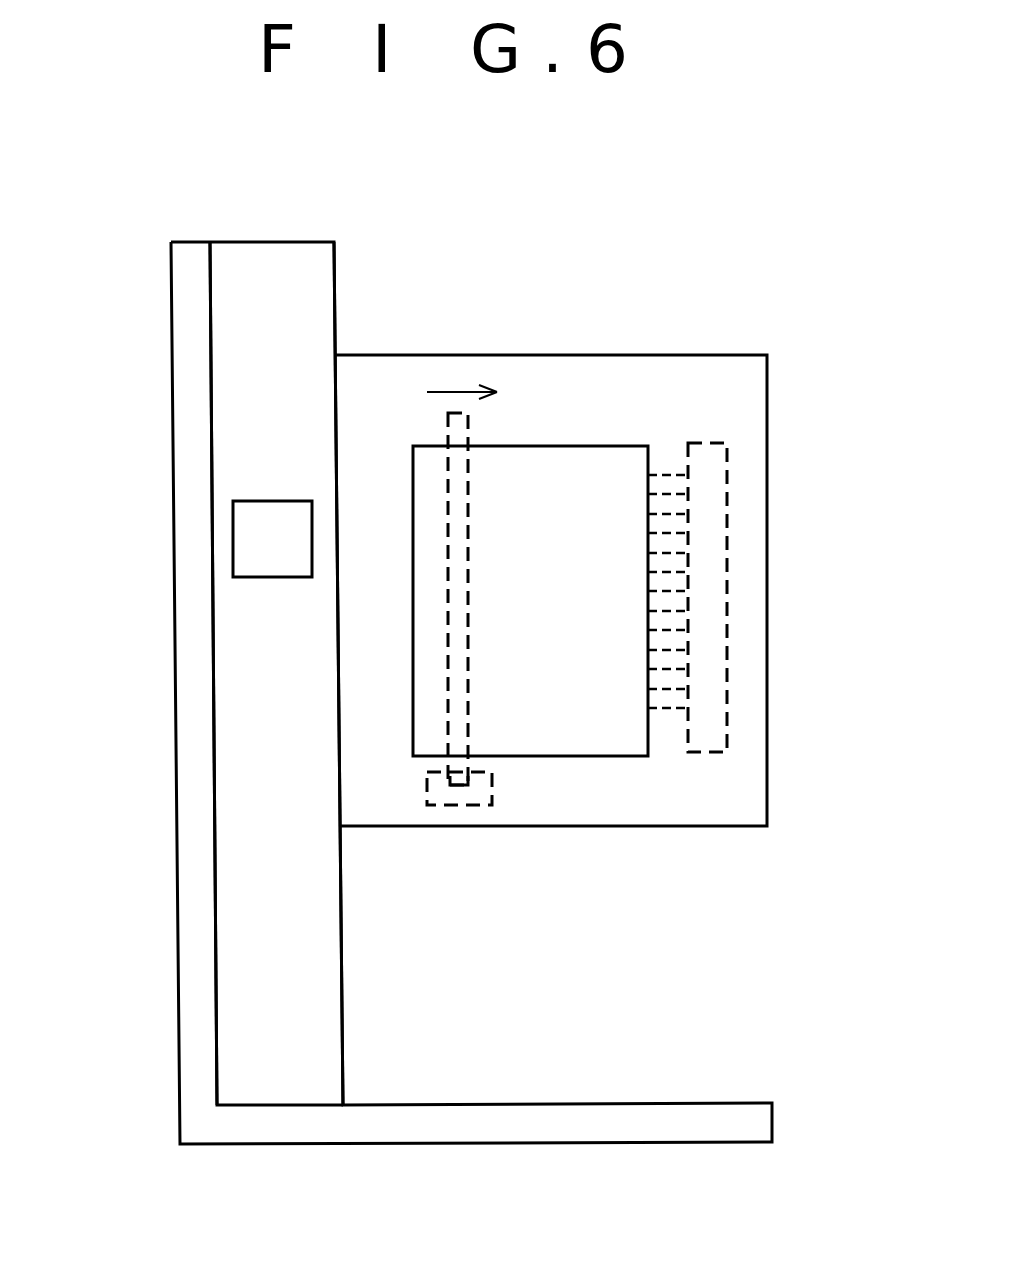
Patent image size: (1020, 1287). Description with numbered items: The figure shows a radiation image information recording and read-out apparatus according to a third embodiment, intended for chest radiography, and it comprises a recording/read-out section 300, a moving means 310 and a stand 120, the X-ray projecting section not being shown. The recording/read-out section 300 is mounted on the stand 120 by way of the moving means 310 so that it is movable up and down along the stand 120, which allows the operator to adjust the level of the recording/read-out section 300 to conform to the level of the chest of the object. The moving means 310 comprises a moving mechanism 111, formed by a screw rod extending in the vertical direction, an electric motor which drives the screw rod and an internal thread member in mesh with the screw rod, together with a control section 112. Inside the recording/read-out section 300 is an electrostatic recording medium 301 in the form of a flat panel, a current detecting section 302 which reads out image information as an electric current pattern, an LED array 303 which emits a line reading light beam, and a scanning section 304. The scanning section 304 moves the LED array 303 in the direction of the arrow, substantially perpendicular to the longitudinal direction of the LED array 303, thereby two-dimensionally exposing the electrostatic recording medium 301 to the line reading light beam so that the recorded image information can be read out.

The stand 120 is at (172, 318).
The moving mechanism 111 is at (211, 440).
The control section 112 is at (233, 548).
The moving means 310 is at (338, 276).
The recording/read-out section 300 is at (489, 355).
The electrostatic recording medium 301 is at (575, 446).
The current detecting section 302 is at (728, 452).
The LED array 303 is at (468, 510).
The scanning section 304 is at (492, 797).